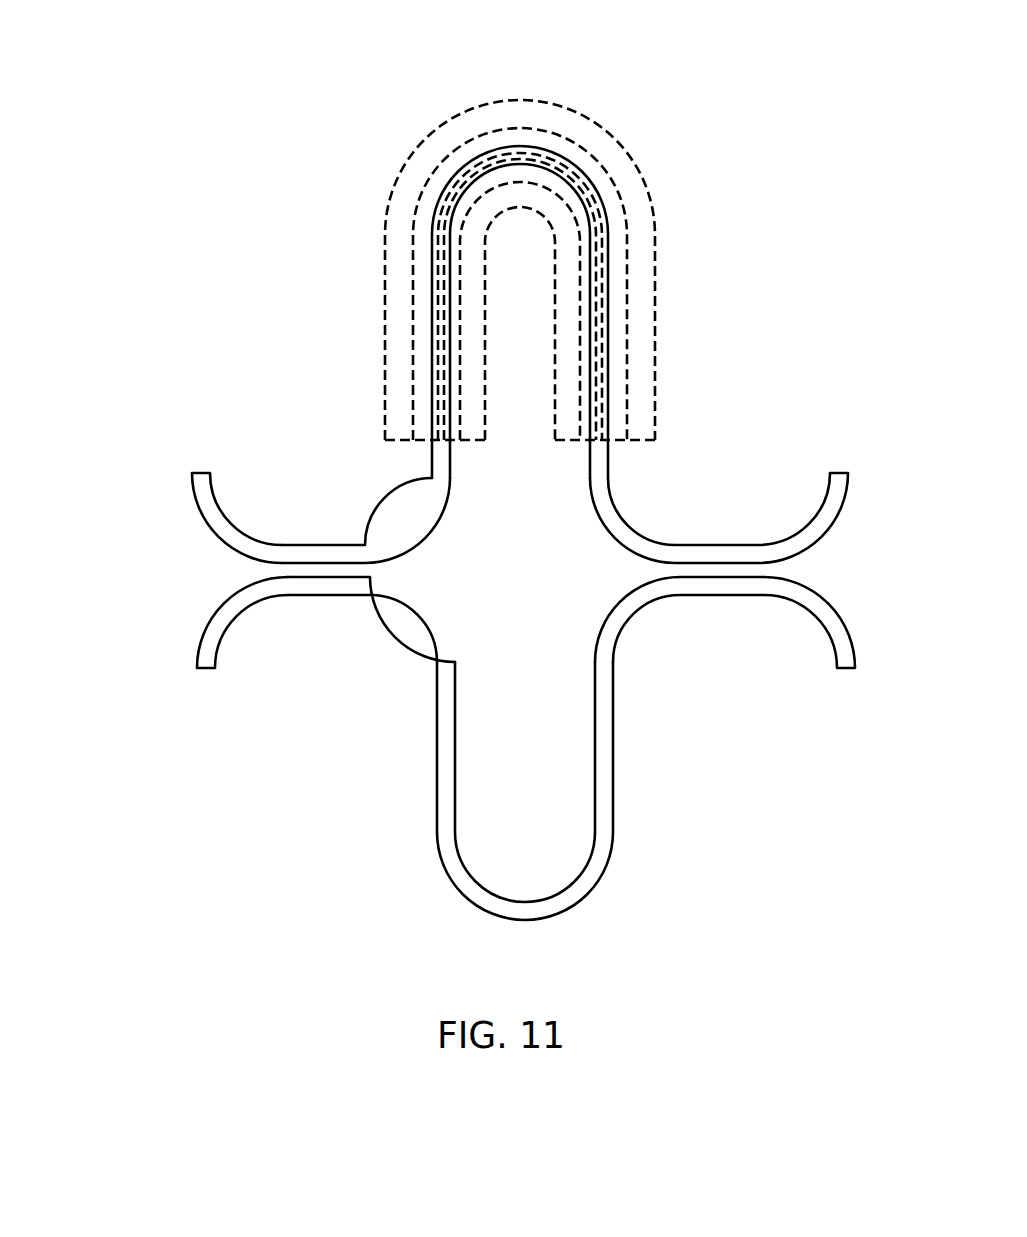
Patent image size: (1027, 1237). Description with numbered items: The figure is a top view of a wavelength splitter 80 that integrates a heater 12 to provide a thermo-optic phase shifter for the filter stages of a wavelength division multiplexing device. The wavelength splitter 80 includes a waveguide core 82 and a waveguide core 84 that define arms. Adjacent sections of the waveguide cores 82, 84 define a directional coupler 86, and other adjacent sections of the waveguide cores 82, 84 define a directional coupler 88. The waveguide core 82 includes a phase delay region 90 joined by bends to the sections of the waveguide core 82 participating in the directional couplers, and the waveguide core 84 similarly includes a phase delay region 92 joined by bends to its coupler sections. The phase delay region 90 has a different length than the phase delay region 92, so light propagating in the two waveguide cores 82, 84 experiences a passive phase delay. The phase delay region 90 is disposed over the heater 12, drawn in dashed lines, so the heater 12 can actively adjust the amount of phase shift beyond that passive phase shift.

The wavelength splitter 80 is at (126, 73).
The heater 12 is at (674, 221).
The phase delay region 90 is at (436, 195).
The phase delay region 92 is at (403, 857).
The waveguide core 82 is at (208, 503).
The waveguide core 84 is at (222, 625).
The directional coupler 86 is at (311, 517).
The directional coupler 88 is at (716, 530).